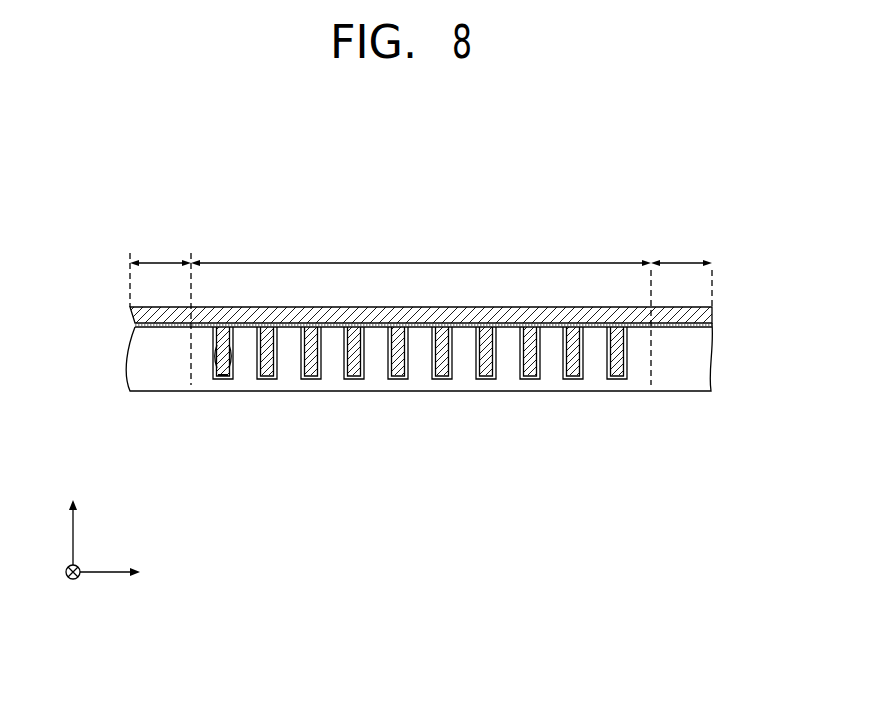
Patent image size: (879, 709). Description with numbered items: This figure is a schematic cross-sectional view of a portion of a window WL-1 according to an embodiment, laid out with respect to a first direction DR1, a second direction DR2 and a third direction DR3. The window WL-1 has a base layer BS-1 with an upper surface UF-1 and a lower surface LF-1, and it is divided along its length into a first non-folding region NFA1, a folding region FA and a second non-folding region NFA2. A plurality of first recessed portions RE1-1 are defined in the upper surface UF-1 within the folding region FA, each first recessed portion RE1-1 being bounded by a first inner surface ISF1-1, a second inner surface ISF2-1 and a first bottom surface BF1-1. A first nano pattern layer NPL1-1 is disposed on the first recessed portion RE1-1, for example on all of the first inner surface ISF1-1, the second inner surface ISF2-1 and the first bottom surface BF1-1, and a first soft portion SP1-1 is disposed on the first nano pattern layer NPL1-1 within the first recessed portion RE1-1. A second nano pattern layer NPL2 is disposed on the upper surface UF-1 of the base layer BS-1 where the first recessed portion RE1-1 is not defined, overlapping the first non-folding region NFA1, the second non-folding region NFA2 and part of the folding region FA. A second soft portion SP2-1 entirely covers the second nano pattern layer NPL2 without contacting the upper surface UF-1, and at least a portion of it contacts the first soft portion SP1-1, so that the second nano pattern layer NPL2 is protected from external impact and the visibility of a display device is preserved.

The window WL-1 is at (619, 194).
The upper surface UF-1 is at (147, 318).
The lower surface LF-1 is at (150, 392).
The second soft portion SP2-1 is at (712, 316).
The second nano pattern layer NPL2 is at (714, 327).
The base layer BS-1 is at (700, 368).
The first soft portion SP1-1 is at (440, 373).
The first nano pattern layer NPL1-1 is at (535, 373).
The first recessed portion RE1-1 is at (361, 359).
The first inner surface ISF1-1 is at (213, 368).
The second inner surface ISF2-1 is at (233, 370).
The first bottom surface BF1-1 is at (224, 378).
The first non-folding region NFA1 is at (160, 306).
The folding region FA is at (421, 247).
The second non-folding region NFA2 is at (681, 306).
The first direction DR1 is at (129, 572).
The second direction DR2 is at (73, 588).
The third direction DR3 is at (73, 520).